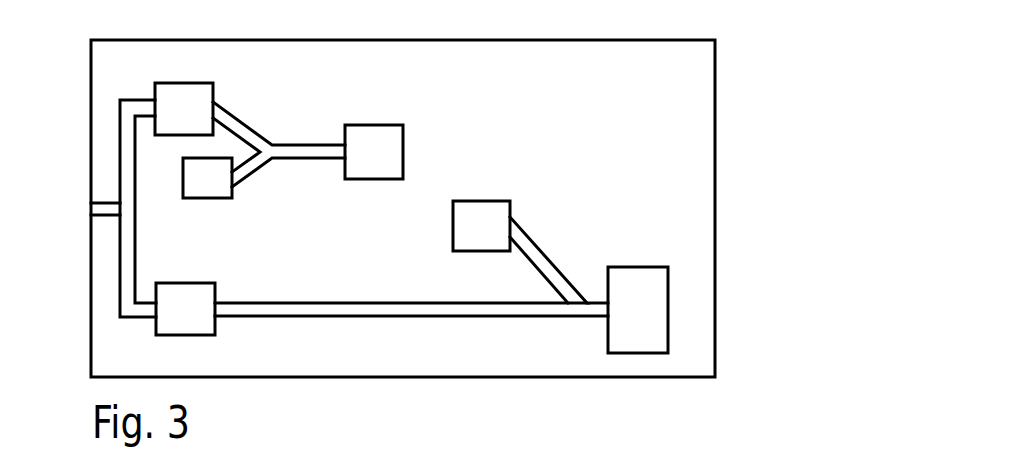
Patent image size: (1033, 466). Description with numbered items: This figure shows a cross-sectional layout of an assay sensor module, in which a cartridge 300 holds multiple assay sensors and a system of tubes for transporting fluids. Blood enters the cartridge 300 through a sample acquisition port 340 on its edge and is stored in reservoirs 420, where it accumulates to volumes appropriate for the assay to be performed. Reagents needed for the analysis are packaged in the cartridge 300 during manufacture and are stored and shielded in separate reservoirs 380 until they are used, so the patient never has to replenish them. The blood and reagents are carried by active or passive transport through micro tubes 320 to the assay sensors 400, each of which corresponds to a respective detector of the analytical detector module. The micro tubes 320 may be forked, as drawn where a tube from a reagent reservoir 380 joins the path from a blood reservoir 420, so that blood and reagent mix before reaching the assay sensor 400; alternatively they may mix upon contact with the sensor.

The cartridge 300 is at (550, 38).
The micro tubes 320 is at (248, 115).
The sample acquisition port 340 is at (90, 209).
The reservoirs 380 is at (207, 199).
The assay sensors 400 is at (373, 125).
The reservoirs 420 is at (180, 83).